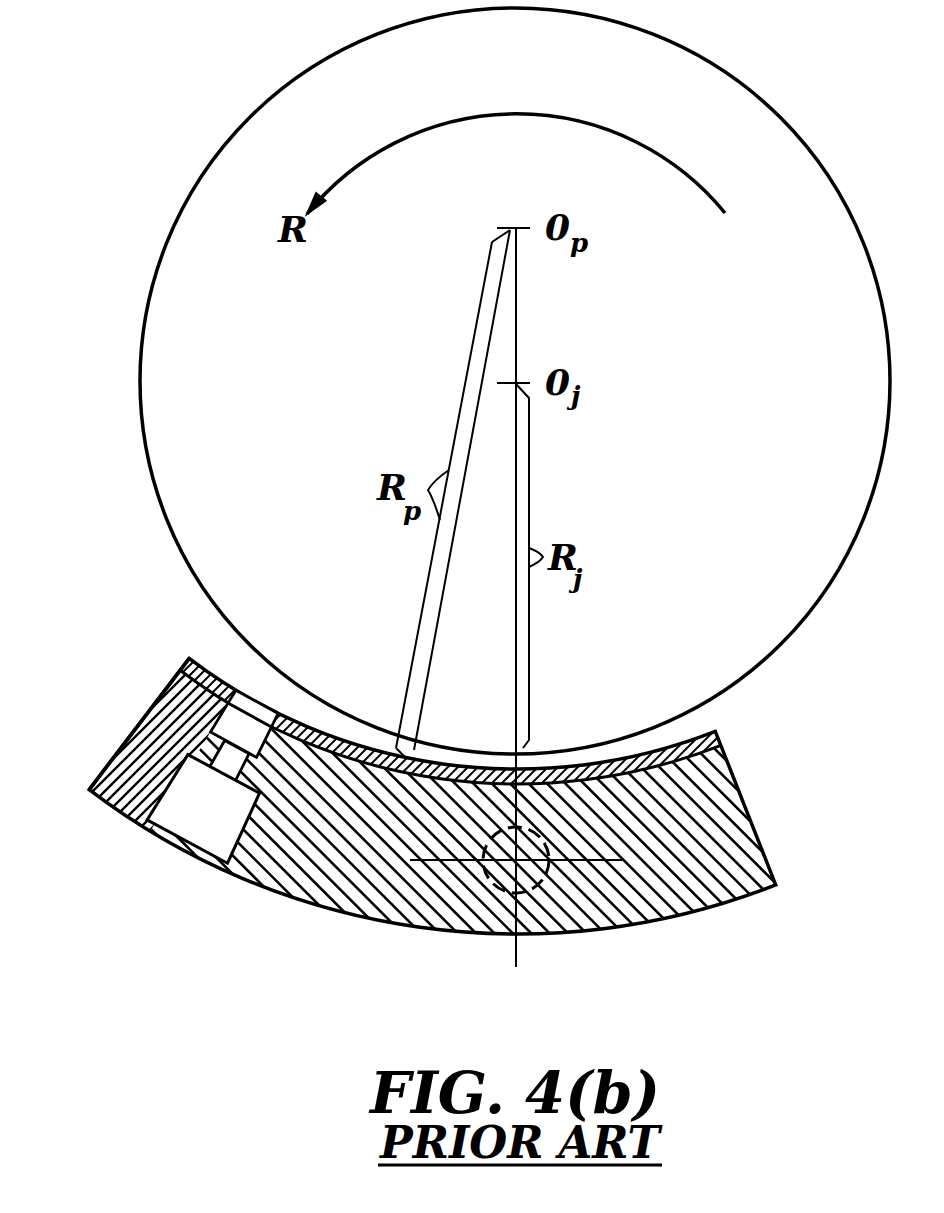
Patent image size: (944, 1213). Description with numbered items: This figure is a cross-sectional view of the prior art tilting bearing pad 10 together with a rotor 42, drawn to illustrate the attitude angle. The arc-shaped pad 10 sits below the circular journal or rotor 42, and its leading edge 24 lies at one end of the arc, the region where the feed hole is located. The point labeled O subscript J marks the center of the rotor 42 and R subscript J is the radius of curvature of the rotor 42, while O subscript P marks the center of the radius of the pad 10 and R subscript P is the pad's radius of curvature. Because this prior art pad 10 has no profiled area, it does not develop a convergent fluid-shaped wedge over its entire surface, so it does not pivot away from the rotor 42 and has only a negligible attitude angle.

The tilting bearing pad 10 is at (735, 819).
The leading edge 24 is at (140, 722).
The rotor 42 is at (342, 378).